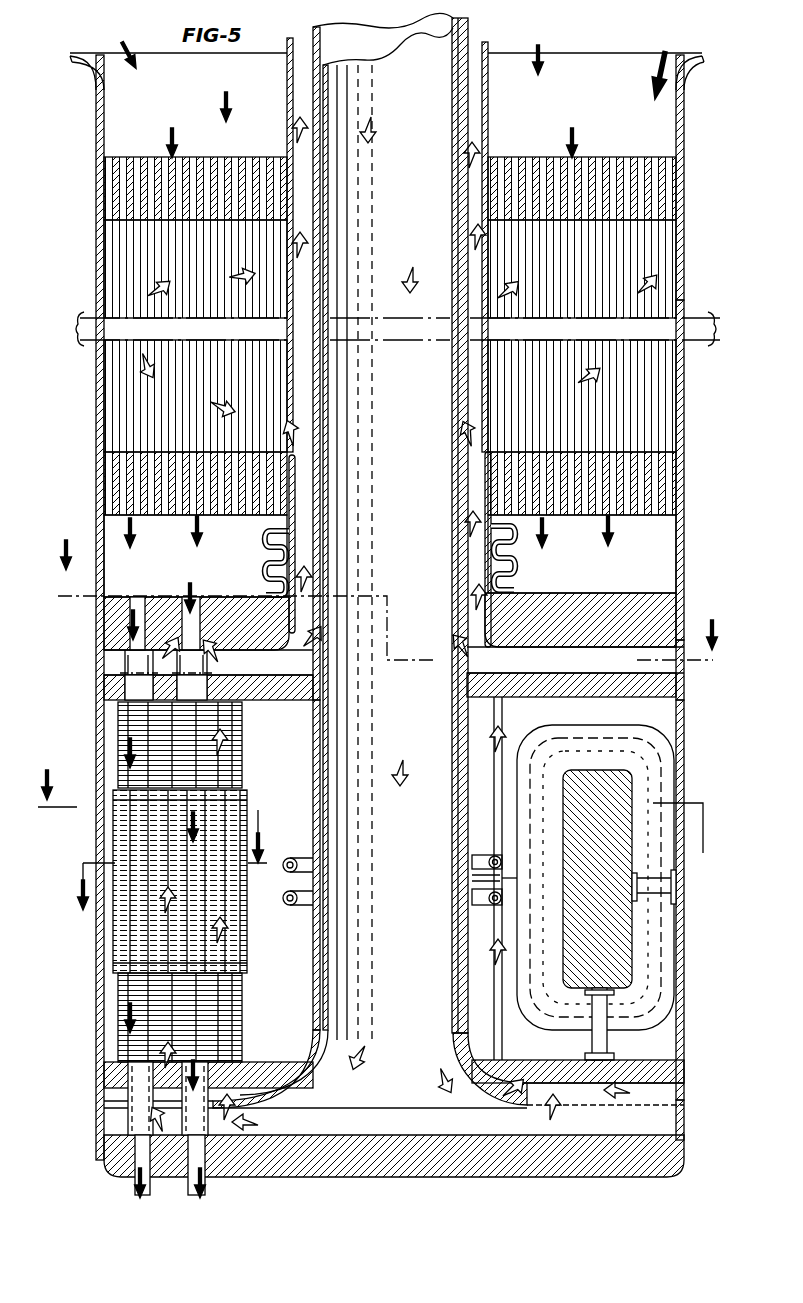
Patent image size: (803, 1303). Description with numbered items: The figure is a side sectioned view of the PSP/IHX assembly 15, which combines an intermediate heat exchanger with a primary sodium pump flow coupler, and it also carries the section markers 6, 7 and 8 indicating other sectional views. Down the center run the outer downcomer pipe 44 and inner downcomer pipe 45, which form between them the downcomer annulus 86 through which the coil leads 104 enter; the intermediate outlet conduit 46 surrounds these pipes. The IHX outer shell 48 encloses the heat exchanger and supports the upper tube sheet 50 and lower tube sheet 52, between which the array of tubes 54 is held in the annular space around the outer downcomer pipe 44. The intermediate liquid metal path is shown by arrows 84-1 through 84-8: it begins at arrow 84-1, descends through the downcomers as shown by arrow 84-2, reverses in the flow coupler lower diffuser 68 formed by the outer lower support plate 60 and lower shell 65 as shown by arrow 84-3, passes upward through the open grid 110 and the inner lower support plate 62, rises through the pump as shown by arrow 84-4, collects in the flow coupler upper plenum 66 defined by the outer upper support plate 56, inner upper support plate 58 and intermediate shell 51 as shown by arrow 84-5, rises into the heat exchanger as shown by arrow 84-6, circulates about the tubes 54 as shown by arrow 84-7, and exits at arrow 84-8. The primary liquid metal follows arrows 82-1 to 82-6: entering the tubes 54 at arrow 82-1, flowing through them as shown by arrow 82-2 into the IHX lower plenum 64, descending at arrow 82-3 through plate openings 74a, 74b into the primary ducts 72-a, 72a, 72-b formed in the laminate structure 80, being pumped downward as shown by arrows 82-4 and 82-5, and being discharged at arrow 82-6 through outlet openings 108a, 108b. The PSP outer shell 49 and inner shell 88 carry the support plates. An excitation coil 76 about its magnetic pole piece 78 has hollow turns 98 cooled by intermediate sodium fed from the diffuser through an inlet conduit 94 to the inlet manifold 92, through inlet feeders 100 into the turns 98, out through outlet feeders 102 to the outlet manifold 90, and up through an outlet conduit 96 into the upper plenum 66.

The PSP/IHX assembly 15 is at (694, 129).
The outer downcomer pipe 44 is at (480, 34).
The inner downcomer pipe 45 is at (450, 63).
The intermediate outlet conduit 46 is at (489, 104).
The IHX outer shell 48 is at (684, 378).
The PSP outer shell 49 is at (684, 966).
The upper tube sheet 50 is at (588, 158).
The intermediate shell 51 is at (686, 672).
The lower tube sheet 52 is at (628, 518).
The tubes 54 is at (125, 265).
The outer upper support plate 56 is at (620, 600).
The inner upper support plate 58 is at (597, 698).
The outer lower support plate 60 is at (375, 1178).
The inner lower support plate 62 is at (652, 1047).
The IHX lower plenum 64 is at (582, 565).
The lower shell 65 is at (685, 1121).
The flow coupler upper plenum 66 is at (574, 670).
The flow coupler lower diffuser 68 is at (426, 1128).
The primary duct 72-a is at (128, 689).
The primary duct 72a is at (130, 1124).
The primary duct 72-b is at (196, 623).
The plate opening 74a is at (133, 597).
The plate opening 74b is at (186, 597).
The excitation coil 76 is at (622, 730).
The magnetic pole piece 78 is at (628, 782).
The laminate structure 80 is at (260, 801).
The primary liquid metal flow arrow 82-1 is at (143, 72).
The primary liquid metal flow arrow 82-2 is at (145, 534).
The primary liquid metal flow arrow 82-3 is at (130, 624).
The primary liquid metal flow arrow 82-4 is at (128, 745).
The primary liquid metal flow arrow 82-5 is at (130, 1020).
The primary liquid metal flow arrow 82-6 is at (138, 1196).
The intermediate liquid metal flow arrow 84-1 is at (372, 120).
The intermediate liquid metal flow arrow 84-2 is at (395, 897).
The intermediate liquid metal flow arrow 84-3 is at (288, 1122).
The intermediate liquid metal flow arrow 84-4 is at (230, 940).
The intermediate liquid metal flow arrow 84-5 is at (240, 700).
The intermediate liquid metal flow arrow 84-6 is at (298, 546).
The intermediate liquid metal flow arrow 84-7 is at (140, 290).
The intermediate liquid metal flow arrow 84-8 is at (290, 130).
The downcomer annulus 86 is at (460, 970).
The inner shell 88 is at (322, 752).
The outlet manifold 90 is at (288, 873).
The inlet manifold 92 is at (297, 906).
The inlet conduit 94 is at (504, 1043).
The outlet conduit 96 is at (503, 720).
The hollow turns 98 is at (660, 752).
The inlet feeder 100 is at (470, 445).
The outlet feeder 102 is at (505, 877).
The coil leads 104 is at (497, 886).
The outlet opening 108a is at (150, 1180).
The outlet opening 108b is at (205, 1185).
The open grid 110 is at (566, 1106).
The section line 6- 6 is at (388, 585).
The section line 7- 7 is at (384, 792).
The section line 8- 8 is at (173, 875).